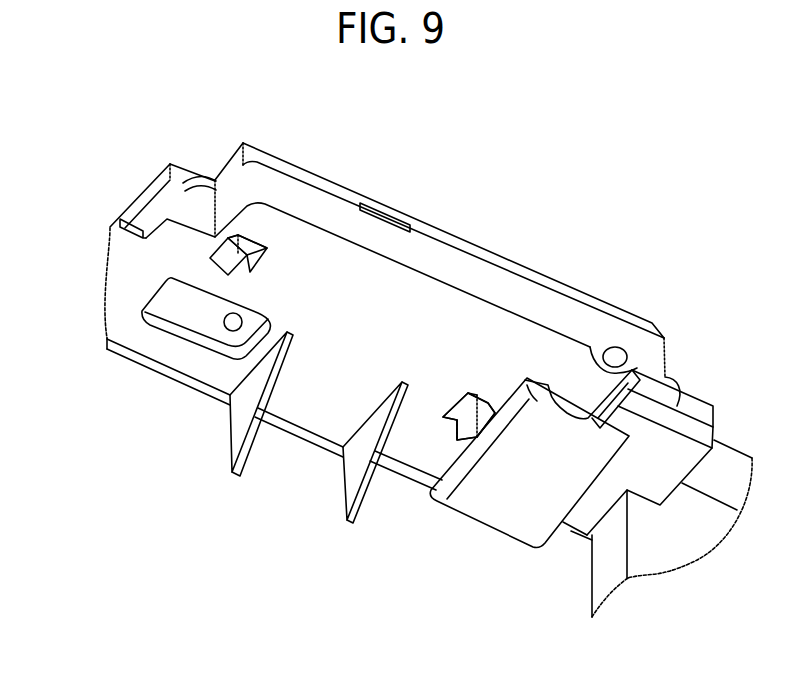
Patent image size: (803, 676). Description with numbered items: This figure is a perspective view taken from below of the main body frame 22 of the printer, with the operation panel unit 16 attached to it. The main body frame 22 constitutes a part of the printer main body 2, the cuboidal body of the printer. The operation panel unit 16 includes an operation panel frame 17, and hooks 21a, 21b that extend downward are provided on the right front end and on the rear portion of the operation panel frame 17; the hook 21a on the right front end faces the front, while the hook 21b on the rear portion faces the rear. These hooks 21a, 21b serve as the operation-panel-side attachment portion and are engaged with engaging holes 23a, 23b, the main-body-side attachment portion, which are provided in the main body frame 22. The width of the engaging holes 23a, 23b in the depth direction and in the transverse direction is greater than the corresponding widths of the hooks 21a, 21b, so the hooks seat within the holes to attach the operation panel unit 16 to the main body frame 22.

The printer main body 2 is at (328, 405).
The operation panel unit 16 is at (593, 283).
The operation panel frame 17 is at (441, 240).
The hook 21a is at (210, 258).
The hook 21b is at (470, 432).
The main body frame 22 is at (322, 257).
The engaging hole 23a is at (258, 245).
The engaging hole 23b is at (452, 405).